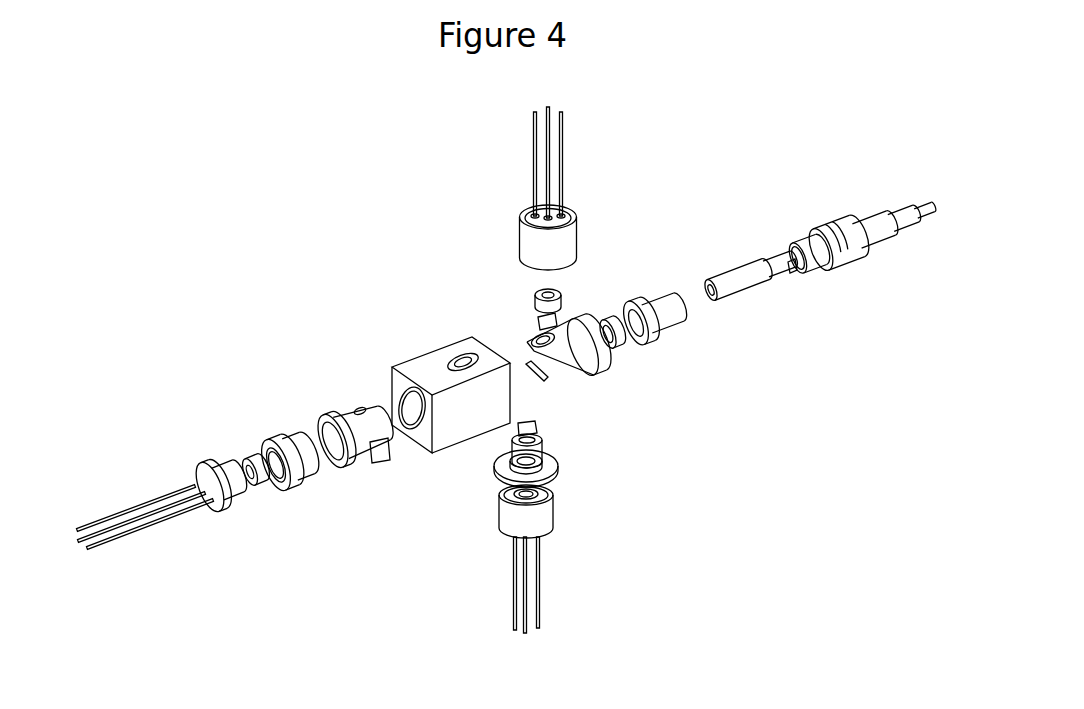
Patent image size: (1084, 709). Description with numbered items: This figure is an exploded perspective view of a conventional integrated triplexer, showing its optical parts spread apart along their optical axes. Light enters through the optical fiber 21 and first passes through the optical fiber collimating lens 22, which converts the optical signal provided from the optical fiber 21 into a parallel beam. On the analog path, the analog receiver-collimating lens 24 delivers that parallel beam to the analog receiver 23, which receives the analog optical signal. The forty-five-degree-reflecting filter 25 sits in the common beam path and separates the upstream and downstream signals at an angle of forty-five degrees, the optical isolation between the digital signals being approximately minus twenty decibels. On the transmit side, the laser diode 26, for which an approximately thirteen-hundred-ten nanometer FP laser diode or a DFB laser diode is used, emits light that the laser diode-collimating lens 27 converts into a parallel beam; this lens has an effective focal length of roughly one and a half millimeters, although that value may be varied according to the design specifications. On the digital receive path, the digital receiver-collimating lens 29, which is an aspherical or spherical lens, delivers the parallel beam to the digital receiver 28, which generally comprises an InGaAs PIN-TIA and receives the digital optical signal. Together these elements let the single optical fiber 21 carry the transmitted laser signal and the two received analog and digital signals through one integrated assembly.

The optical fiber 21 is at (723, 297).
The optical fiber collimating lens 22 is at (641, 348).
The analog receiver 23 is at (577, 237).
The analog receiver-collimating lens 24 is at (562, 293).
The 45-degree-reflecting filter 25 is at (547, 378).
The laser diode 26 is at (207, 463).
The laser diode-collimating lens 27 is at (256, 458).
The digital receiver 28 is at (554, 517).
The digital receiver-collimating lens 29 is at (543, 443).